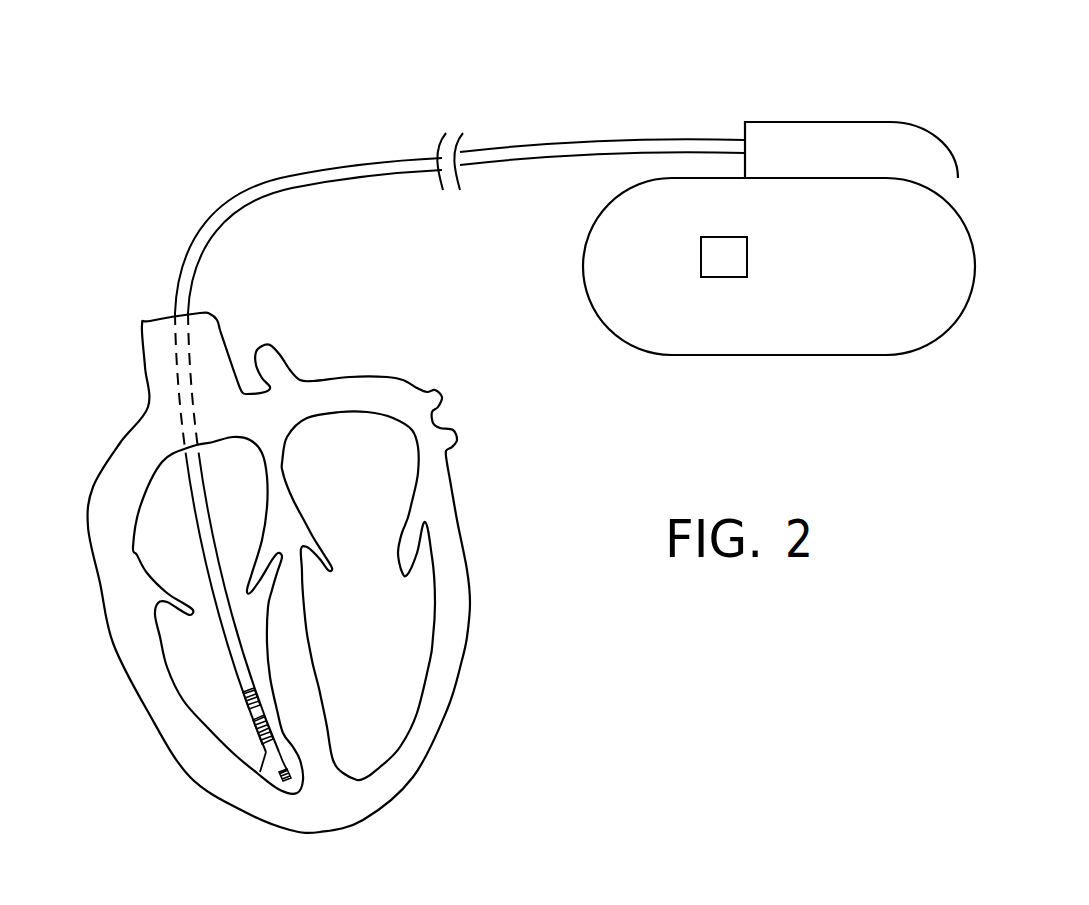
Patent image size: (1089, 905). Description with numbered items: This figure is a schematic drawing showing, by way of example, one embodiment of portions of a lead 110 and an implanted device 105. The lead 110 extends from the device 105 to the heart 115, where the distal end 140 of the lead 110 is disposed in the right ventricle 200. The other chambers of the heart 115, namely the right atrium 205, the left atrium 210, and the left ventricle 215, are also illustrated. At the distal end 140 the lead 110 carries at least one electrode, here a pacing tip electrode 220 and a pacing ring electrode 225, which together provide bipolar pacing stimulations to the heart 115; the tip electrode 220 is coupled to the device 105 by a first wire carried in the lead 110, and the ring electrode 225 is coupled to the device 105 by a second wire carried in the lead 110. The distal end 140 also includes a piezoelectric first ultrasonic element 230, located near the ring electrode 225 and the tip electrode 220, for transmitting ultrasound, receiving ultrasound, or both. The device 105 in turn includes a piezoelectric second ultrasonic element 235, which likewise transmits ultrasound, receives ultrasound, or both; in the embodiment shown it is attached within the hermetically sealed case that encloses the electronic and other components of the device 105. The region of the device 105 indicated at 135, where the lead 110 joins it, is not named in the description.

The device 105 is at (975, 245).
The lead 110 is at (300, 173).
The heart 115 is at (470, 613).
The header / connector block 135 is at (693, 125).
The distal end 140 is at (236, 767).
The right ventricle 200 is at (217, 655).
The right atrium 205 is at (260, 498).
The left atrium 210 is at (377, 493).
The left ventricle 215 is at (394, 638).
The pacing tip electrode 220 is at (280, 787).
The pacing ring electrode 225 is at (258, 741).
The first ultrasonic element 230 is at (243, 700).
The second ultrasonic element 235 is at (747, 257).